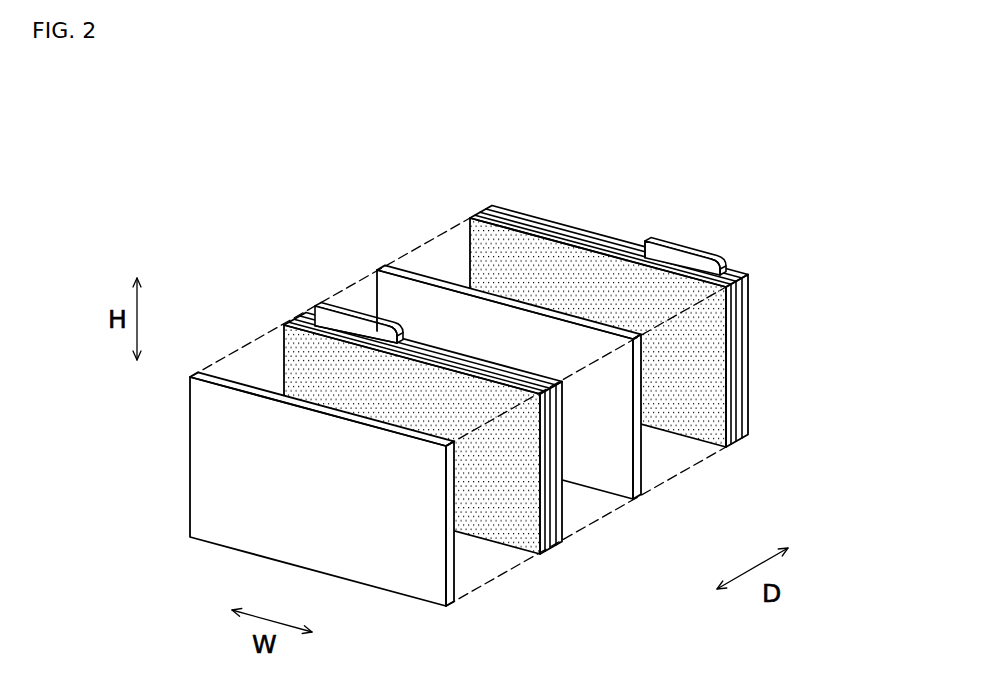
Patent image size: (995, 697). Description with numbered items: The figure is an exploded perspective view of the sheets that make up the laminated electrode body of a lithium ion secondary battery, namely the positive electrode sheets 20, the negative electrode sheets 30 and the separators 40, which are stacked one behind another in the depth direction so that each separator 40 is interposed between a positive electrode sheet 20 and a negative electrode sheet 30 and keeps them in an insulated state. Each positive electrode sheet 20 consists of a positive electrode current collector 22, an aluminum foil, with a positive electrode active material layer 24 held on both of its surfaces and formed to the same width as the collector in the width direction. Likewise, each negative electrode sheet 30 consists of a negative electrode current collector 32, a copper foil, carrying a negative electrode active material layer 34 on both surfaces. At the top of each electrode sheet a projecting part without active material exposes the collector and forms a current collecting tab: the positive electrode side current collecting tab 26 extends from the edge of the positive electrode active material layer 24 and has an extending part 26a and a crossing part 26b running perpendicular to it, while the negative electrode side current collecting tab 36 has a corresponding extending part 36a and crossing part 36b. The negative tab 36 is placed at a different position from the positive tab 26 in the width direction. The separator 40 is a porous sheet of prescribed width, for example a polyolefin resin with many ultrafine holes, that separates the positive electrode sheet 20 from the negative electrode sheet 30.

The positive electrode sheet 20 is at (639, 336).
The positive electrode current collector 22 is at (736, 430).
The positive electrode active material layer 24 is at (745, 414).
The positive electrode side current collecting tab 26 is at (719, 225).
The extending part 26a is at (648, 249).
The crossing part 26b is at (728, 265).
The negative electrode sheet 30 is at (422, 435).
The negative electrode current collector 32 is at (552, 538).
The negative electrode active material layer 34 is at (558, 530).
The negative electrode side current collecting tab 36 is at (300, 290).
The extending part 36a is at (381, 343).
The crossing part 36b is at (333, 316).
The separator 40 is at (395, 268).